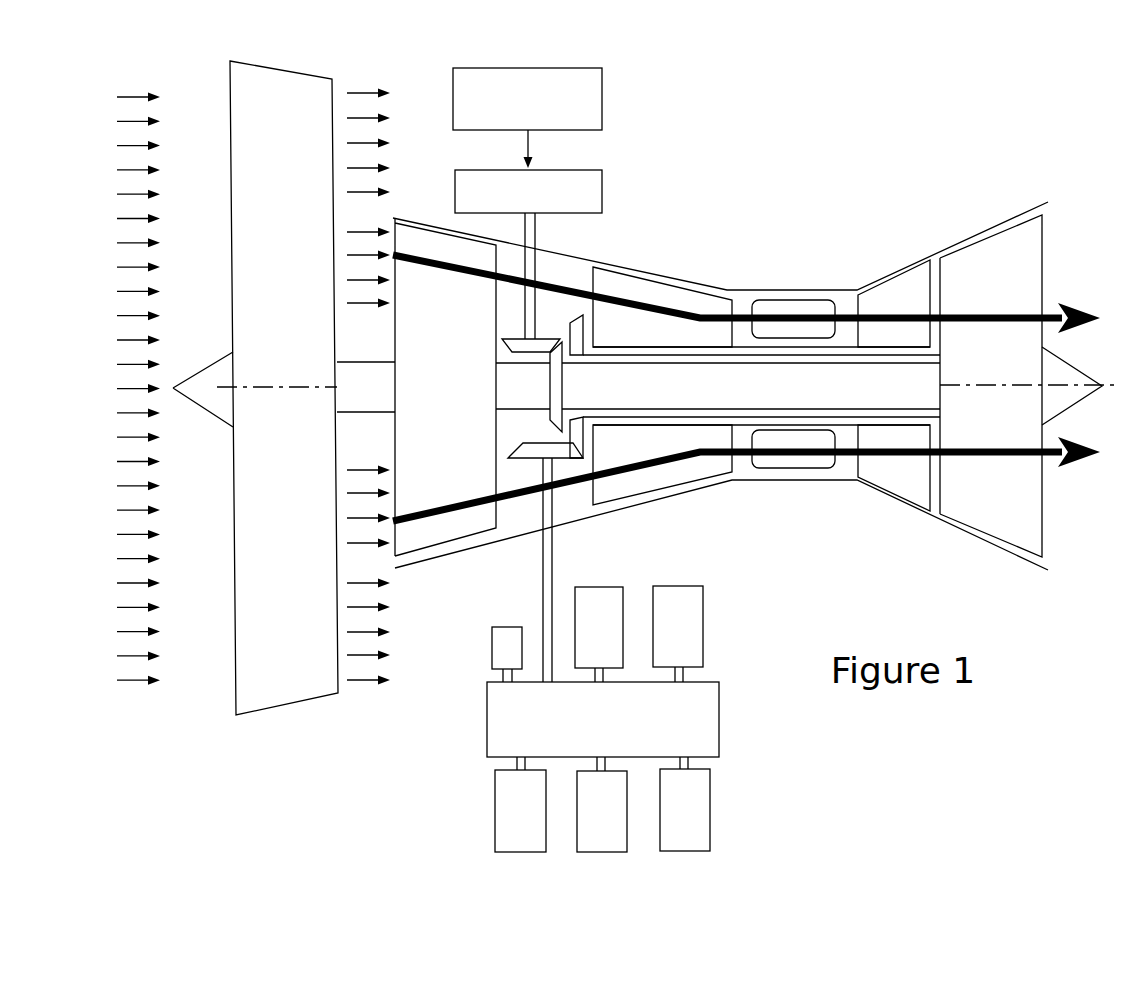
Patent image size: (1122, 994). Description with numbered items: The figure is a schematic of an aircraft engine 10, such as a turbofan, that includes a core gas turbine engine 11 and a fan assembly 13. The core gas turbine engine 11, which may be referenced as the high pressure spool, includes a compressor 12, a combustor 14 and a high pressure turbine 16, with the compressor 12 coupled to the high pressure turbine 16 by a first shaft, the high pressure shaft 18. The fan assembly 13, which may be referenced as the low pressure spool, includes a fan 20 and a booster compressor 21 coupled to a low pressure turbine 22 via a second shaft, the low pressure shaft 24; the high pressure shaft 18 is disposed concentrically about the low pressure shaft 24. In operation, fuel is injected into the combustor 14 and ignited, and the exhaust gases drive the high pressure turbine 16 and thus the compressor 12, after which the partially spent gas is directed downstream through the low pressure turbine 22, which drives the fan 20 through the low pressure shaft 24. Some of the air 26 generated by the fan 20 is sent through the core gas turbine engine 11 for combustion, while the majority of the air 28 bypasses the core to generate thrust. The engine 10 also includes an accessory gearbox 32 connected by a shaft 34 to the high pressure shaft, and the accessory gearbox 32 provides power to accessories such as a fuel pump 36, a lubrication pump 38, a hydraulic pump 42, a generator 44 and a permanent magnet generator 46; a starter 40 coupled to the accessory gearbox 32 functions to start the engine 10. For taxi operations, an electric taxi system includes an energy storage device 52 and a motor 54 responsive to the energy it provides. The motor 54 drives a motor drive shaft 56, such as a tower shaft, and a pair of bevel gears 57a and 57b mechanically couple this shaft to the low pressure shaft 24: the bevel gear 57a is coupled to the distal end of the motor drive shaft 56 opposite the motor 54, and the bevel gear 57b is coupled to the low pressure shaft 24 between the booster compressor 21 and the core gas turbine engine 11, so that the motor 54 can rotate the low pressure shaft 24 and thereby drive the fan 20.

The aircraft engine 10 is at (804, 180).
The core gas turbine engine 11 is at (746, 470).
The compressor 12 is at (662, 278).
The fan assembly 13 is at (828, 394).
The combustor 14 is at (797, 300).
The high pressure turbine 16 is at (900, 292).
The high pressure shaft 18 is at (703, 347).
The fan 20 is at (278, 92).
The booster compressor 21 is at (414, 226).
The low pressure turbine 22 is at (986, 505).
The low pressure shaft 24 is at (853, 377).
The air 26 is at (1053, 305).
The air 28 is at (355, 102).
The accessory gearbox 32 is at (719, 722).
The shaft 34 is at (553, 567).
The fuel pump 36 is at (623, 638).
The lubrication pump 38 is at (703, 606).
The starter 40 is at (710, 831).
The hydraulic pump 42 is at (627, 793).
The generator 44 is at (495, 812).
The permanent magnet generator 46 is at (490, 647).
The energy storage device 52 is at (604, 100).
The motor 54 is at (604, 187).
The motor drive shaft 56 is at (536, 258).
The bevel gear 57a is at (515, 339).
The bevel gear 57b is at (562, 385).